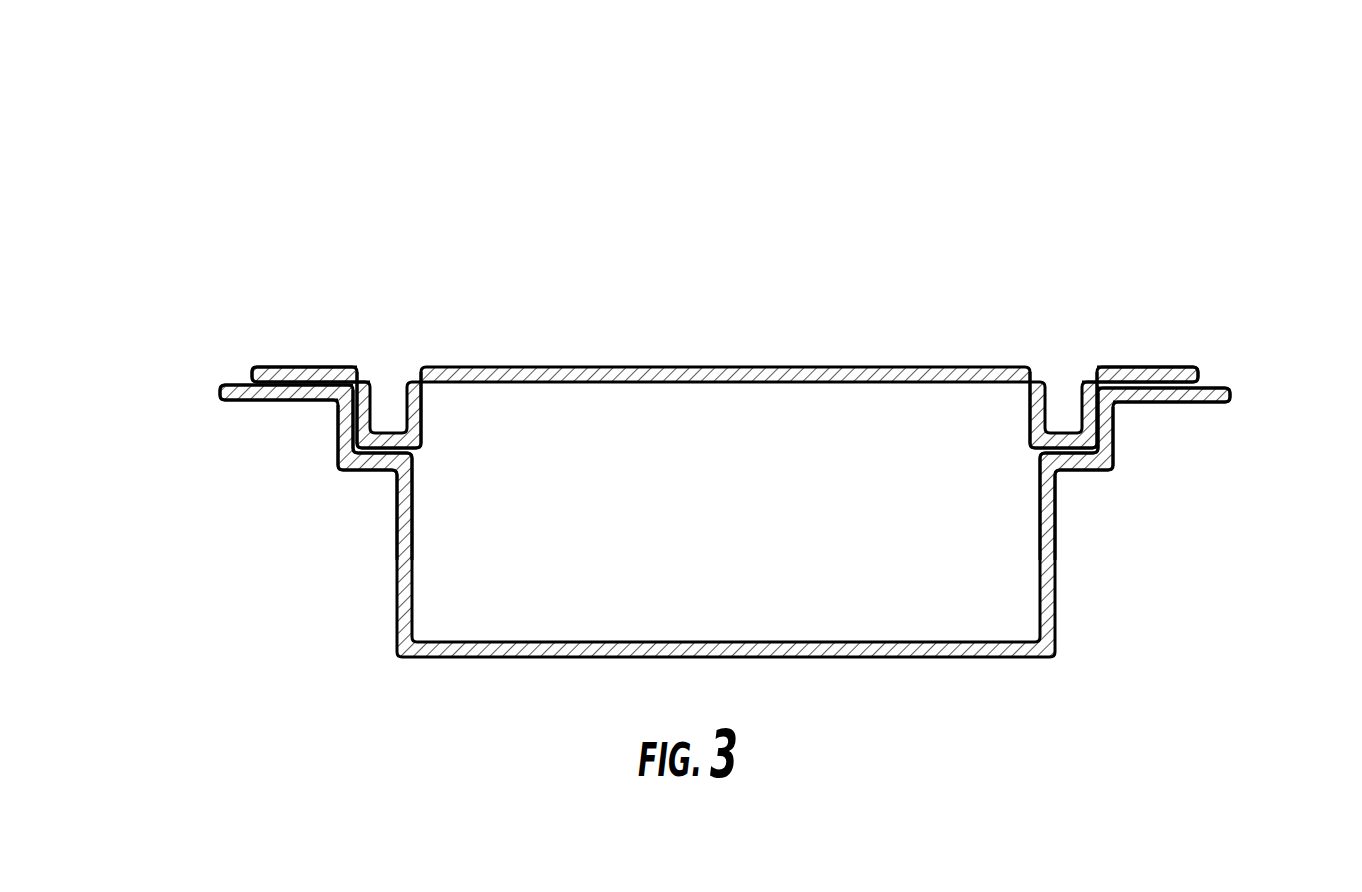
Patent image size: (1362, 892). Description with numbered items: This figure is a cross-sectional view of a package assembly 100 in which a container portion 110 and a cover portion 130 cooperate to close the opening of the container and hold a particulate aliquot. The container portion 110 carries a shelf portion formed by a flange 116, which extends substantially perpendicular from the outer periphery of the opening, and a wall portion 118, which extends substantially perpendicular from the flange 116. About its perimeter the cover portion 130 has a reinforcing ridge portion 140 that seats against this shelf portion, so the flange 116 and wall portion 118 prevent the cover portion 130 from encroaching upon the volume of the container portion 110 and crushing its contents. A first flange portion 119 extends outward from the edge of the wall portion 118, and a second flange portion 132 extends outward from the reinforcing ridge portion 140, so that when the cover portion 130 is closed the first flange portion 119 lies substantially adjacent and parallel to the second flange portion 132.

The package assembly 100 is at (722, 427).
The container portion 110 is at (889, 665).
The flange 116 is at (378, 474).
The wall portion 118 is at (330, 436).
The first flange portion 119 is at (264, 410).
The cover portion 130 is at (735, 362).
The second flange portion 132 is at (285, 360).
The reinforcing ridge portion 140 is at (422, 349).